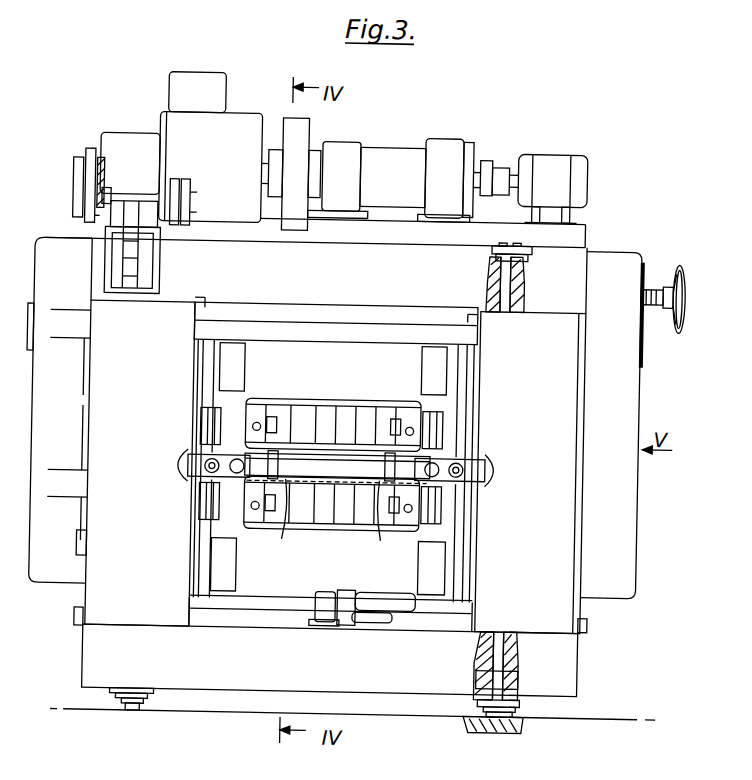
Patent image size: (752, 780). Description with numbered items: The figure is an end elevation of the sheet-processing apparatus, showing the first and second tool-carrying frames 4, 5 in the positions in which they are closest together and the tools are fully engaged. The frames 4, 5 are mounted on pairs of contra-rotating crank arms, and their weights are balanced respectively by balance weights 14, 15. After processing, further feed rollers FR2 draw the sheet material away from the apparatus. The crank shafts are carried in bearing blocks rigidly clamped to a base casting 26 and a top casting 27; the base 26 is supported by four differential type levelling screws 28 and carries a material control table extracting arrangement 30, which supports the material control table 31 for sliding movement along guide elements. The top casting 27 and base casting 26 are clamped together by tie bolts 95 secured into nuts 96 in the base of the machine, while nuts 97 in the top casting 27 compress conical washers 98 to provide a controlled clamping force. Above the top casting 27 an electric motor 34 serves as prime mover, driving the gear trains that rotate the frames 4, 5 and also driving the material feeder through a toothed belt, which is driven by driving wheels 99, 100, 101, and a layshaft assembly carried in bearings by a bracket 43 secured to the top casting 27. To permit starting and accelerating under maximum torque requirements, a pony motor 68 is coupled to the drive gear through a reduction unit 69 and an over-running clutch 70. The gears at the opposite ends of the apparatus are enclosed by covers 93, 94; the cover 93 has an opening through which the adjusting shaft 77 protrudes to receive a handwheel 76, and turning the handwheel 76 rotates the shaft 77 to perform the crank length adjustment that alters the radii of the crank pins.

The first tool-carrying frame 4 is at (331, 400).
The second tool-carrying frame 5 is at (312, 527).
The balance weight 14 is at (233, 381).
The balance weight 15 is at (235, 579).
The base casting 26 is at (419, 692).
The top casting 27 is at (374, 257).
The differential type levelling screws 28 is at (154, 706).
The material control table extracting arrangement 30 is at (326, 598).
The material control table 31 is at (338, 495).
The electric motor 34 is at (245, 122).
The bracket 43 is at (150, 269).
The pony motor 68 is at (550, 160).
The reduction unit 69 is at (443, 143).
The over-running clutch 70 is at (387, 157).
The handwheel 76 is at (673, 317).
The adjusting shaft 77 is at (651, 280).
The cover 93 is at (631, 392).
The cover 94 is at (63, 382).
The tie bolts 95 is at (495, 287).
The nuts 96 is at (524, 671).
The nuts 97 is at (508, 246).
The conical washers 98 is at (524, 259).
The driving wheel 99 is at (72, 160).
The driving wheel 100 is at (73, 195).
The driving wheel 101 is at (168, 183).
The feed rollers FR2 is at (283, 540).